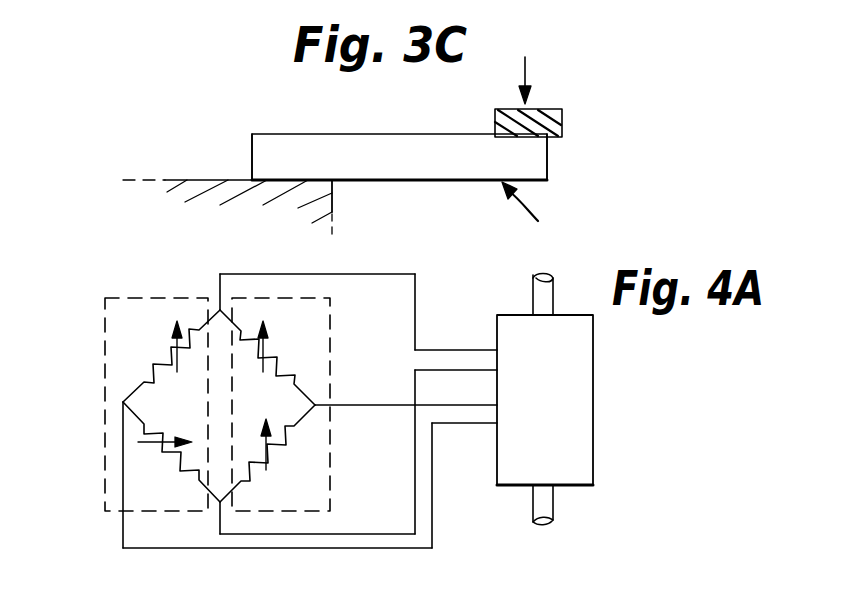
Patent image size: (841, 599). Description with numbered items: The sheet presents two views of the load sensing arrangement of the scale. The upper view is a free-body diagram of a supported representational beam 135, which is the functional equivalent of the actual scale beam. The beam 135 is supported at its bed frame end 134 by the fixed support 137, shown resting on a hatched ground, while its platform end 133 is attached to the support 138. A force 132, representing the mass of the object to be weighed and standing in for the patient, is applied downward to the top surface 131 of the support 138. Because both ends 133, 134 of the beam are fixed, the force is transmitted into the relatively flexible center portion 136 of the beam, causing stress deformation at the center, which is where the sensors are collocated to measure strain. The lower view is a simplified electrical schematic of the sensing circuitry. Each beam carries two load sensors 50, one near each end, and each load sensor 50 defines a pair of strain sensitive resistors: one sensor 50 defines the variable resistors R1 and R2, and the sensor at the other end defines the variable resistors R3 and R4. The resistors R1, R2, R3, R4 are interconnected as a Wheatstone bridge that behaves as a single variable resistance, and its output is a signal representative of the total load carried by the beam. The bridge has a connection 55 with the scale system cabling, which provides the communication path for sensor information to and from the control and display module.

In FIG. 3C, the top surface 131 is at (545, 113).
In FIG. 3C, the force 132 is at (526, 72).
In FIG. 3C, the platform end 133 is at (548, 165).
In FIG. 3C, the bed frame end 134 is at (252, 152).
In FIG. 3C, the beam 135 is at (538, 221).
In FIG. 3C, the center portion 136 is at (394, 157).
In FIG. 3C, the fixed support 137 is at (218, 198).
In FIG. 3C, the support 138 is at (560, 122).
In FIG. 4A, the load sensor 50 is at (161, 297).
In FIG. 4A, the connection 55 is at (568, 440).
In FIG. 4A, the variable resistor R1 is at (171, 356).
In FIG. 4A, the variable resistor R2 is at (171, 452).
In FIG. 4A, the variable resistor R3 is at (267, 357).
In FIG. 4A, the variable resistor R4 is at (267, 453).